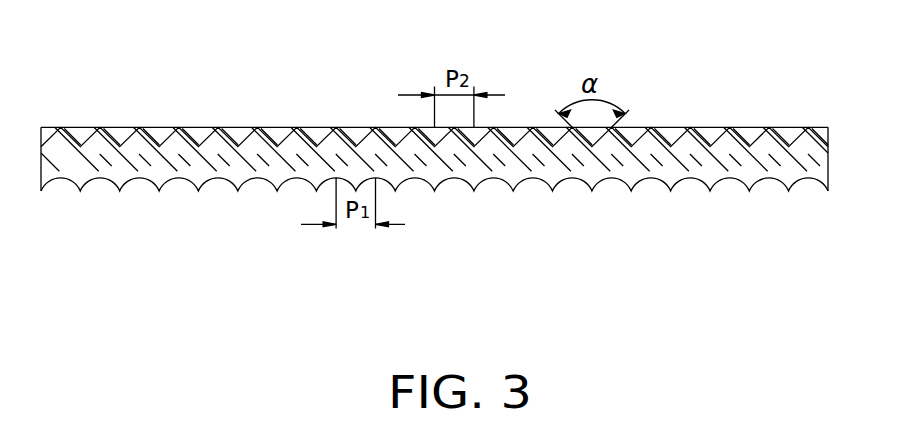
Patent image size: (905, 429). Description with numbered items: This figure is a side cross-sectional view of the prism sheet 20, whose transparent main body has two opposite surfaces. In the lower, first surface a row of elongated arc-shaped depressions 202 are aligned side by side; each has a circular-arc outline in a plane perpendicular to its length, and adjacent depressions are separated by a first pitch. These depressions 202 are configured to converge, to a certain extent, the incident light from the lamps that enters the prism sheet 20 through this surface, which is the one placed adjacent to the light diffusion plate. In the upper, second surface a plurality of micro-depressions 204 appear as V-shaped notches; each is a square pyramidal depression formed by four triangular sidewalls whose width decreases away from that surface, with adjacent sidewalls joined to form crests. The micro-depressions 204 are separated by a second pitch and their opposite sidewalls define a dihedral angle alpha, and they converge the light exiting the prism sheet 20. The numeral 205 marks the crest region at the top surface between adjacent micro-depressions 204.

The prism sheet 20 is at (437, 156).
The elongated arc-shaped depressions 202 is at (728, 178).
The micro-depressions 204 is at (671, 145).
The top light emitting surface 205 is at (769, 127).